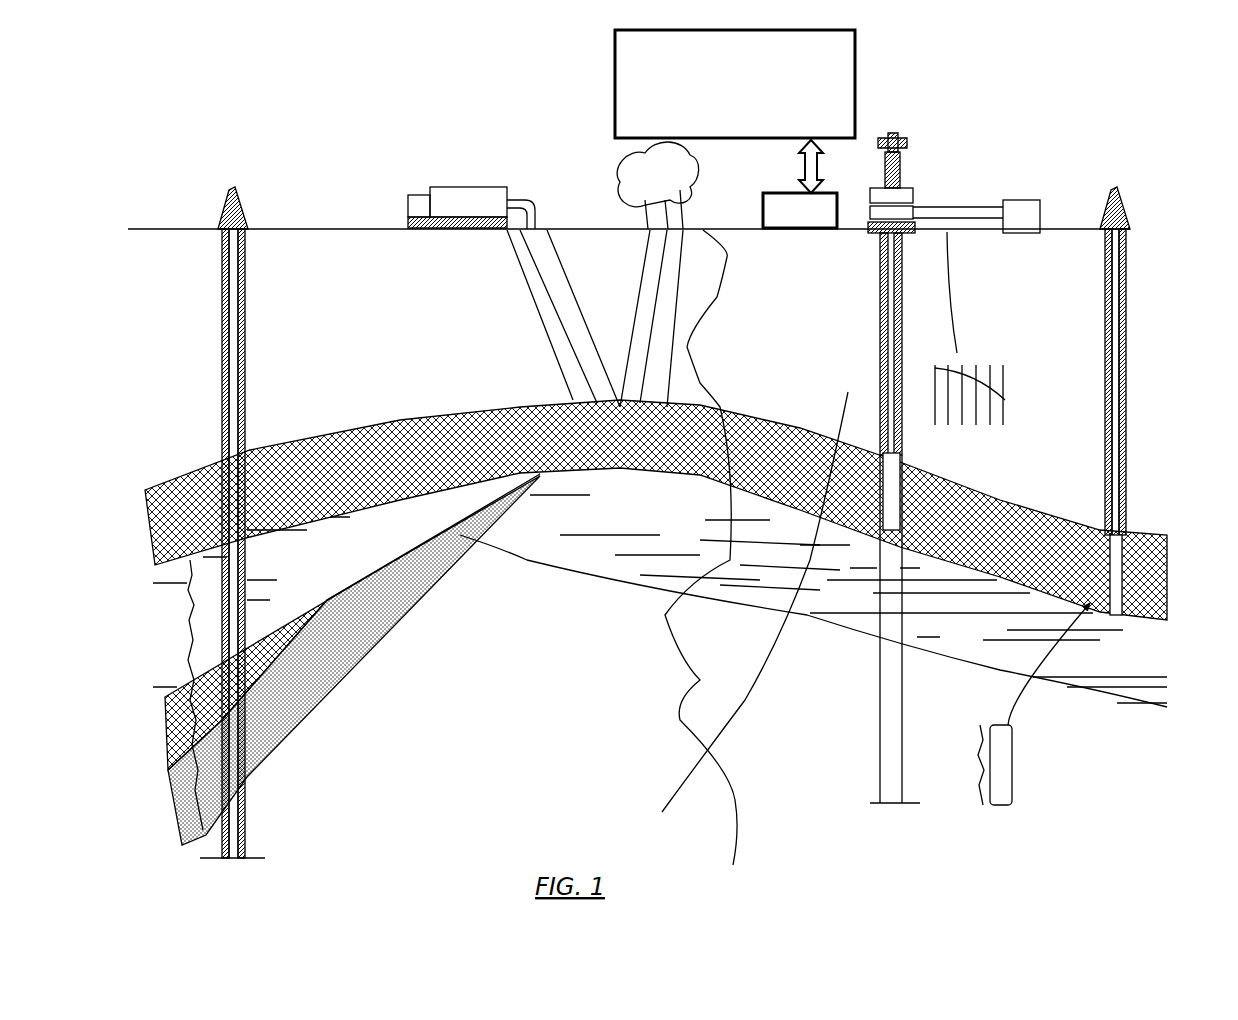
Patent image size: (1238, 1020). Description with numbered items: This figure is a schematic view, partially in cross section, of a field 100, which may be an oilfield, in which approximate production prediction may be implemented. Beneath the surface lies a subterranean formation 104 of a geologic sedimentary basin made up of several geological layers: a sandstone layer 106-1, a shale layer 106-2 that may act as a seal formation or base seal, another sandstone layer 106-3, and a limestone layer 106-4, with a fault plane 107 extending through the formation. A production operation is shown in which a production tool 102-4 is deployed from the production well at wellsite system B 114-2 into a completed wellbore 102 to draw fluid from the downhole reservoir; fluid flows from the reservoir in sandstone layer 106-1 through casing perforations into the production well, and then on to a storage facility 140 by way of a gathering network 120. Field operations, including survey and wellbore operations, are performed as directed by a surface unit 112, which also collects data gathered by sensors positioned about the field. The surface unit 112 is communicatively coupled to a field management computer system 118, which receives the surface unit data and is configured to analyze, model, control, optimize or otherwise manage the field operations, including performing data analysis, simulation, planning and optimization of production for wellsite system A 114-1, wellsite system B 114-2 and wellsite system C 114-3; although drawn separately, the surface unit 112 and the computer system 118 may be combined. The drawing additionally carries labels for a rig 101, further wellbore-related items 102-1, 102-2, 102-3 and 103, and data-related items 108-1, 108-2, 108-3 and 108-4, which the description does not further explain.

The field 100 is at (515, 150).
The rig 101 is at (1175, 198).
The completed wellbore 102 is at (880, 300).
The seismic truck / wellbore 102-1 is at (428, 186).
The wellbore 102-2 is at (1149, 440).
The wellbore 102-3 is at (253, 808).
The production tool 102-4 is at (1005, 530).
The wellbore 103 is at (1128, 283).
The subterranean formation 104 is at (512, 645).
The sandstone layer 106-1 is at (656, 510).
The shale layer 106-2 is at (660, 601).
The sandstone layer 106-3 is at (352, 622).
The limestone layer 106-4 is at (354, 660).
The fault plane 107 is at (847, 392).
The data acquisition / seismic trace 108-1 is at (698, 683).
The data plot / well log 108-2 is at (978, 735).
The well log data 108-3 is at (190, 625).
The production data plot 108-4 is at (985, 430).
The surface unit 112 is at (800, 184).
The wellsite system A 114-1 is at (258, 204).
The wellsite system B 114-2 is at (911, 128).
The wellsite system C 114-3 is at (1135, 178).
The field management computer system 118 is at (735, 84).
The gathering network 120 is at (958, 202).
The storage facility 140 is at (1020, 191).